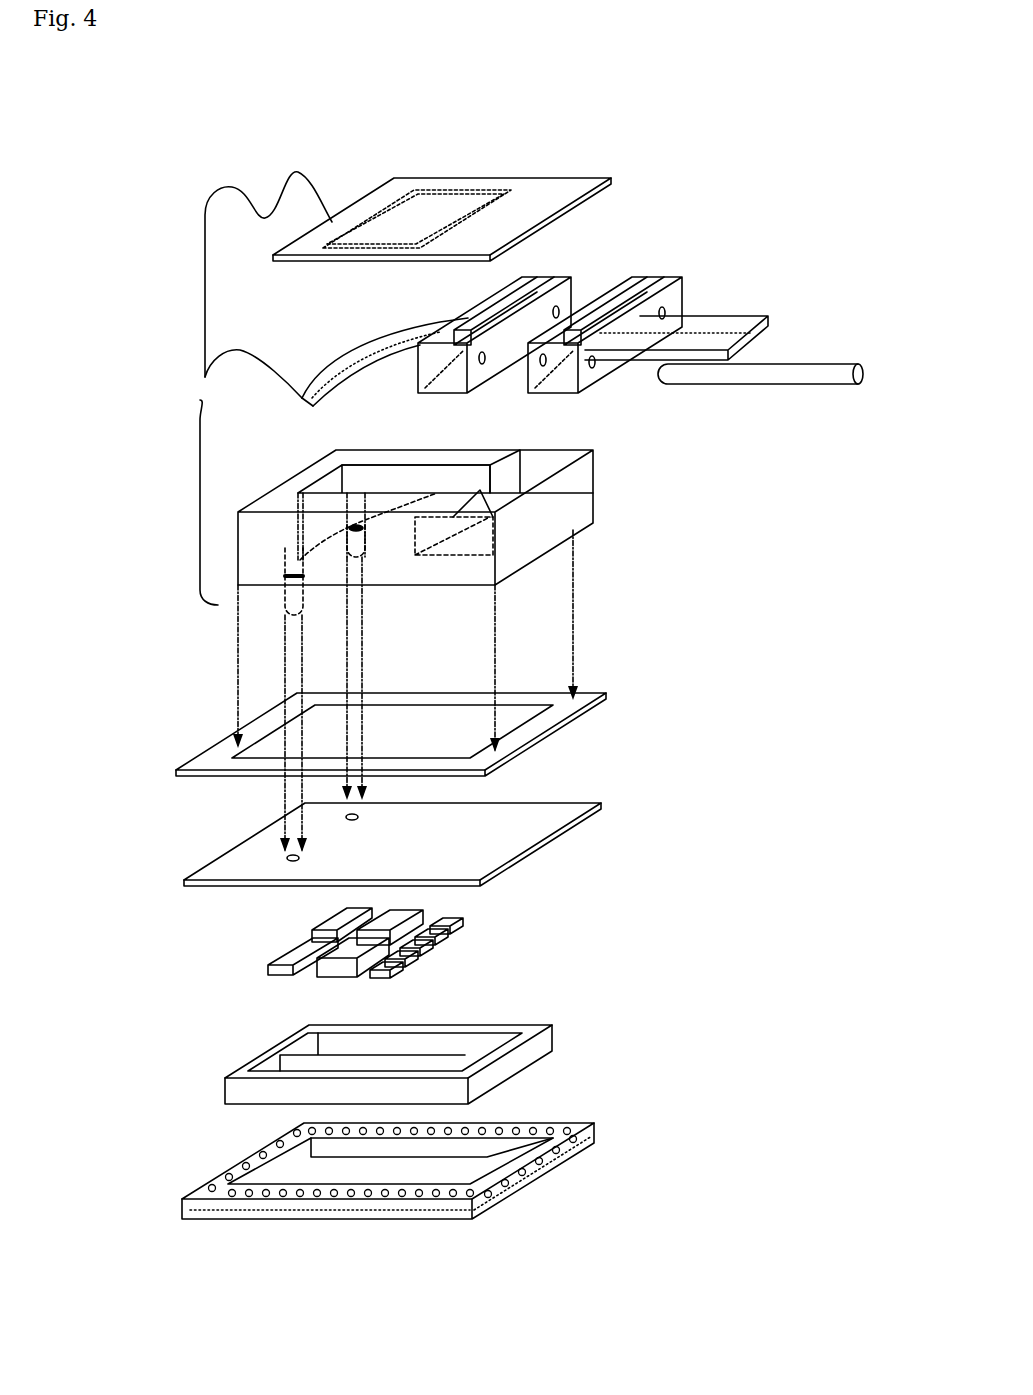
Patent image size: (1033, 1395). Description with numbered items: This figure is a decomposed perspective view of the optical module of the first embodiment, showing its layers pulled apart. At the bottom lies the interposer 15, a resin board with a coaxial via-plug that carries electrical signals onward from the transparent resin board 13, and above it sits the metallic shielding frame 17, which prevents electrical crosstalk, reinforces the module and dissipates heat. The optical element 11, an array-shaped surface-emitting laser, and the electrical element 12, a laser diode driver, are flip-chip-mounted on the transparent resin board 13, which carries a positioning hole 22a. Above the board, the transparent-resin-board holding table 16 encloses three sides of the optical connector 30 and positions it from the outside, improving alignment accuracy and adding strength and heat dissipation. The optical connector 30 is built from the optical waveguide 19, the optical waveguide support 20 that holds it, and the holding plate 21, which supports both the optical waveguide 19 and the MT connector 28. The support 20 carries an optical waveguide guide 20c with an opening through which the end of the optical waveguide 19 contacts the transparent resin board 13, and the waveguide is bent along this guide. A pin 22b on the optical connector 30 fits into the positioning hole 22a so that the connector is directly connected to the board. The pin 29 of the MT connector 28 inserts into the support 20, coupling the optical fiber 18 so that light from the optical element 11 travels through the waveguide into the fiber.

The optical element 11 is at (268, 963).
The electrical element 12 is at (432, 930).
The transparent resin board 13 is at (599, 808).
The interposer 15 is at (553, 1163).
The transparent-resin-board holding table 16 is at (237, 746).
The metallic shielding frame 17 is at (553, 1042).
The optical fiber 18 is at (746, 317).
The optical waveguide 19 is at (205, 377).
The optical waveguide support 20 is at (593, 512).
The optical waveguide guide 20c is at (480, 490).
The holding plate 21 is at (230, 193).
The positioning hole 22a is at (366, 815).
The pin 22b is at (300, 604).
The MT connector 28 is at (556, 283).
The pin 29 is at (793, 372).
The optical connector 30 is at (200, 400).